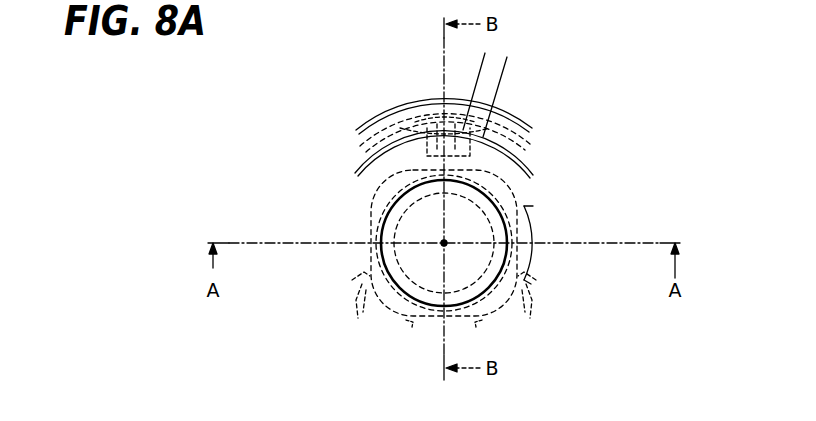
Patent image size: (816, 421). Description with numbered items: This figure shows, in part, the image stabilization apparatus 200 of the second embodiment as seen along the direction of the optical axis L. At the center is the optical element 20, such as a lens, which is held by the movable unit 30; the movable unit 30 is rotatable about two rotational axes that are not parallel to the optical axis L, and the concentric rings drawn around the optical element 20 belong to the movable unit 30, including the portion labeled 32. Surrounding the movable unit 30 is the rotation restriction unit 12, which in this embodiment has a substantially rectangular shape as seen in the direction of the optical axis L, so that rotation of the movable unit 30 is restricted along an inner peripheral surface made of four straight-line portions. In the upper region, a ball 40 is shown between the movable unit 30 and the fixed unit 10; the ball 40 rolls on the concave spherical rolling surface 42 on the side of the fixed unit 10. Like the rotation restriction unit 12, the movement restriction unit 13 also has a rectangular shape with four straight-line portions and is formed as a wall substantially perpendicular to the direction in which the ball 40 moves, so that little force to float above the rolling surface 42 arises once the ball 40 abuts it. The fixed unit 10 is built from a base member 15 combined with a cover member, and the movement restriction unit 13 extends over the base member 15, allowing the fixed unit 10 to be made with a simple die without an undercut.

The image stabilization apparatus 200 is at (598, 205).
The fixed unit 10 is at (512, 80).
The rotation restriction unit 12 is at (360, 278).
The movement restriction unit 13 is at (422, 112).
The base member 15 is at (523, 135).
The optical element 20 is at (407, 220).
The movable unit 30 is at (372, 167).
The holding ring 32 is at (405, 293).
The ball 40 is at (400, 103).
The rolling surface 42 is at (502, 114).
The optical axis L is at (442, 246).